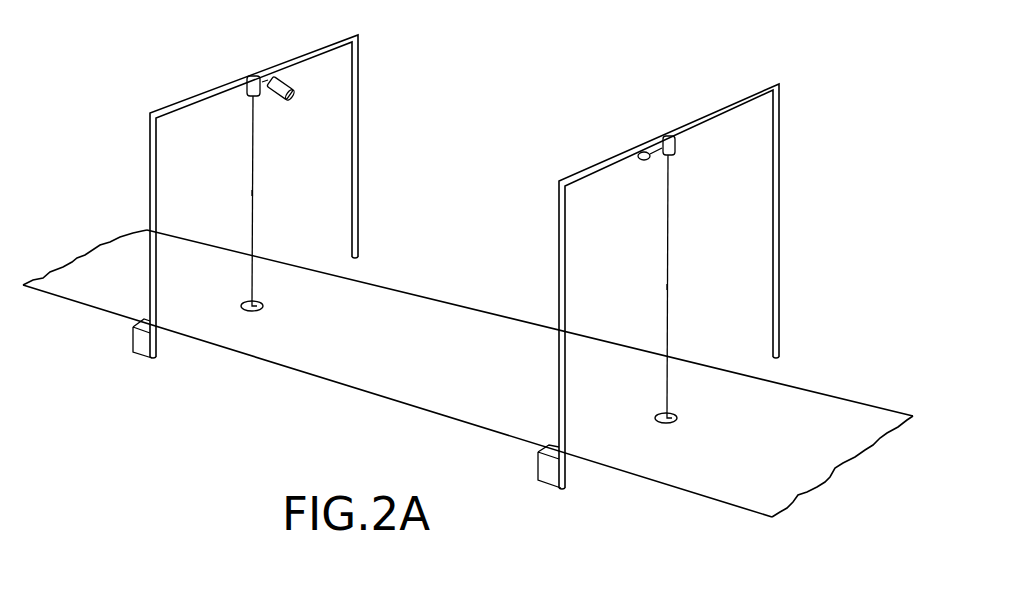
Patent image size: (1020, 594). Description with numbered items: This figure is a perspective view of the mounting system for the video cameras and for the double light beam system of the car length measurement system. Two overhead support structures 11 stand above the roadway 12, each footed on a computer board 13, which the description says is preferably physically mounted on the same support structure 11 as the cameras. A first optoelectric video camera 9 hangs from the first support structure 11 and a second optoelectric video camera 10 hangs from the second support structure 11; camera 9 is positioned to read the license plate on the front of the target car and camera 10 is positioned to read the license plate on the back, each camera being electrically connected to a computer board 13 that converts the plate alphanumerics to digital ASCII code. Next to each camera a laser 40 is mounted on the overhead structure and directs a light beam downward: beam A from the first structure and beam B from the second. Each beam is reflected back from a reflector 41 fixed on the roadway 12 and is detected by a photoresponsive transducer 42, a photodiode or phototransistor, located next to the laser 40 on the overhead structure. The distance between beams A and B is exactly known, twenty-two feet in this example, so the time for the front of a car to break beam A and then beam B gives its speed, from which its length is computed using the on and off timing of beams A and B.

The first optoelectric video camera 9 is at (291, 75).
The second optoelectric video camera 10 is at (650, 159).
The support structure 11 is at (358, 148).
The roadway 12 is at (430, 299).
The computer board 13 is at (141, 340).
The laser 40 is at (251, 77).
The reflector 41 is at (258, 312).
The photoresponsive transducer 42 is at (251, 104).
The light beam A is at (254, 193).
The light beam B is at (668, 287).